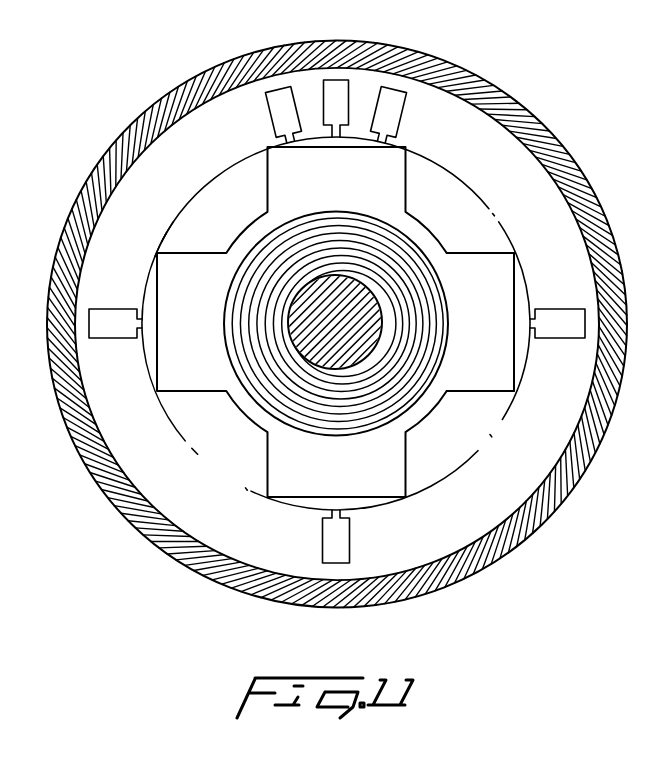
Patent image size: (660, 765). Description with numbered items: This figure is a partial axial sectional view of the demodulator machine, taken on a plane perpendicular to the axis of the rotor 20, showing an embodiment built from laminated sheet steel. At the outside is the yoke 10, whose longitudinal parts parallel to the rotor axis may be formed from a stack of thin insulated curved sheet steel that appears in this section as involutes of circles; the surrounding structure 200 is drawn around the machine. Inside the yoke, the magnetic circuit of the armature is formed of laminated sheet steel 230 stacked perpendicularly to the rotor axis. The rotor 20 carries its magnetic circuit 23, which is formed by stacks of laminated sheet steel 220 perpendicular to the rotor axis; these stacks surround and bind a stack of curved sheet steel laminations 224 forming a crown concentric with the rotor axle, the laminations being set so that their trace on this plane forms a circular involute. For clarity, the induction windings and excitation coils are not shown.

The yoke 10 is at (167, 95).
The rotor 20 is at (357, 353).
The magnetic circuit 23 is at (273, 187).
The stator yoke ring 200 is at (512, 115).
The stacks of laminated sheet steel 220 is at (473, 380).
The curved sheet steel laminations 224 is at (298, 408).
The laminated sheet steel 230 is at (518, 157).